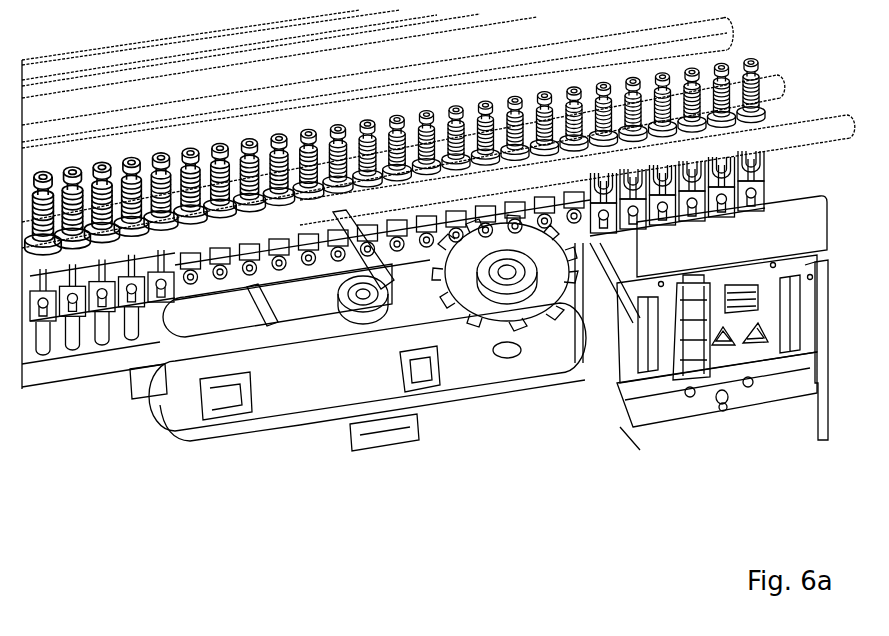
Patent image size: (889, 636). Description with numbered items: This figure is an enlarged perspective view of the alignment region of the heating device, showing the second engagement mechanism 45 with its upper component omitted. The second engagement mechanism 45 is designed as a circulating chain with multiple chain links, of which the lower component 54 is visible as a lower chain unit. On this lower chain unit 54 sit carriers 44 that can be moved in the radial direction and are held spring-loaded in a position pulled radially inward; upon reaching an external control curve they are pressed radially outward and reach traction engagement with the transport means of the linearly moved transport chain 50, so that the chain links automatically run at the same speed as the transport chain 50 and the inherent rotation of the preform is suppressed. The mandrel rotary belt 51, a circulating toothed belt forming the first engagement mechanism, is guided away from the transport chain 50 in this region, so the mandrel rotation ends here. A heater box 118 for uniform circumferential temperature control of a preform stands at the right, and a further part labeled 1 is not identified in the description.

The apparatus 1 is at (70, 338).
The carriers 44 is at (133, 293).
The transport chain 50 is at (775, 72).
The mandrel rotary belt 51 is at (262, 336).
The lower component 54 is at (470, 375).
The heater box 118 is at (630, 360).
The second engagement mechanism 45 is at (428, 478).